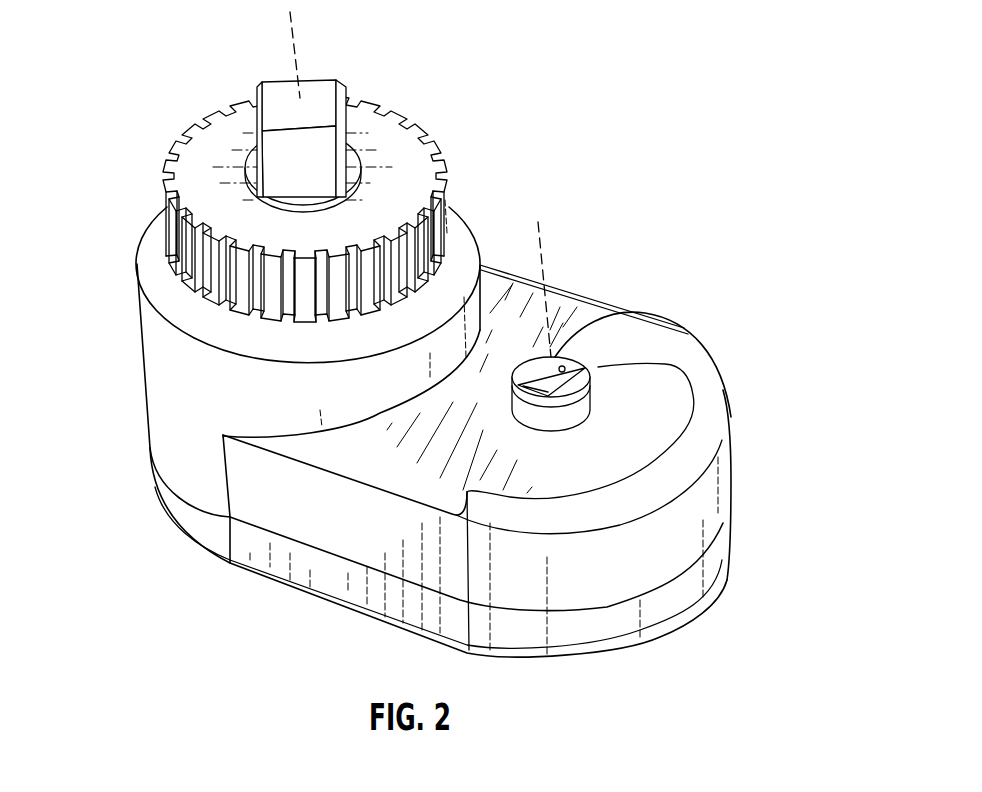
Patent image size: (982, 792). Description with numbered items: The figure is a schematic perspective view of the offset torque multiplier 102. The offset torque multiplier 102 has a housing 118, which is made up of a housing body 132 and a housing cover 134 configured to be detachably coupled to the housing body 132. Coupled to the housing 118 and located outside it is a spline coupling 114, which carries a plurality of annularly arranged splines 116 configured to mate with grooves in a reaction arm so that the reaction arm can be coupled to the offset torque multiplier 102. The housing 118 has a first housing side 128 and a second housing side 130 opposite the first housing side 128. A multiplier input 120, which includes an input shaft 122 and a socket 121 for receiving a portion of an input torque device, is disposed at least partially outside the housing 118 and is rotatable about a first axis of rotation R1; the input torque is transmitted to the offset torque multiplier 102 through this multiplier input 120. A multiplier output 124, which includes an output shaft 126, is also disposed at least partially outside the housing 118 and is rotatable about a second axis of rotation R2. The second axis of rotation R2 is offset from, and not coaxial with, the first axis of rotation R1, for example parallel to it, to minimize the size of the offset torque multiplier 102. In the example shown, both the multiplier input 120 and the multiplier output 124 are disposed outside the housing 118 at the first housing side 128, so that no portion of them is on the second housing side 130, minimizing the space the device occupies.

The offset torque multiplier 102 is at (416, 331).
The spline coupling 114 is at (413, 158).
The splines 116 is at (410, 111).
The housing 118 is at (667, 367).
The multiplier input 120 is at (611, 371).
The socket 121 is at (560, 360).
The input shaft 122 is at (558, 418).
The multiplier output 124 is at (338, 78).
The output shaft 126 is at (257, 165).
The first housing side 128 is at (309, 164).
The second housing side 130 is at (413, 470).
The housing body 132 is at (147, 390).
The housing cover 134 is at (170, 516).
The first axis of rotation R1 is at (548, 246).
The second axis of rotation R2 is at (296, 42).